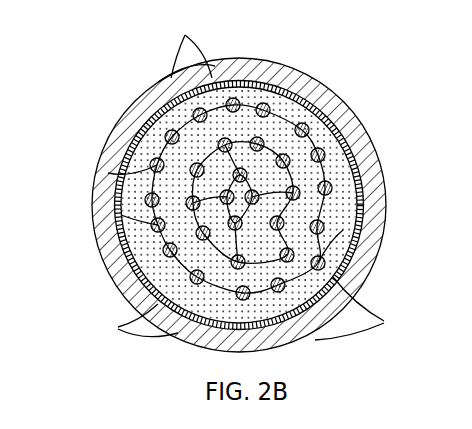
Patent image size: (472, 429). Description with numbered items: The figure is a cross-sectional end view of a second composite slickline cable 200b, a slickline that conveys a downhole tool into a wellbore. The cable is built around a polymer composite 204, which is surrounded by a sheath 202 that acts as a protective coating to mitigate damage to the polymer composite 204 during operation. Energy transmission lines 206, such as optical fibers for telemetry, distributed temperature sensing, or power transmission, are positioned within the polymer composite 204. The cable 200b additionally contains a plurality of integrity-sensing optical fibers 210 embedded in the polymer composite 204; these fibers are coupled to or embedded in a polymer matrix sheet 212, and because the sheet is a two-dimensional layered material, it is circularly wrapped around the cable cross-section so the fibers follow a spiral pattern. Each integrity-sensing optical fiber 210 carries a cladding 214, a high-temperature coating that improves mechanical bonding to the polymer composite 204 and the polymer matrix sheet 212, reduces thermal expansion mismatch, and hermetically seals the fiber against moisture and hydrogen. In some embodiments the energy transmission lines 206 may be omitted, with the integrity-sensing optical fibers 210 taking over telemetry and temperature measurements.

The second composite slickline cable 200b is at (94, 81).
The sheath 202 is at (380, 174).
The polymer composite 204 is at (343, 230).
The energy transmission lines 206 is at (110, 232).
The integrity-sensing optical fibers 210 is at (250, 177).
The polymer matrix sheet 212 is at (320, 82).
The cladding 214 is at (278, 68).